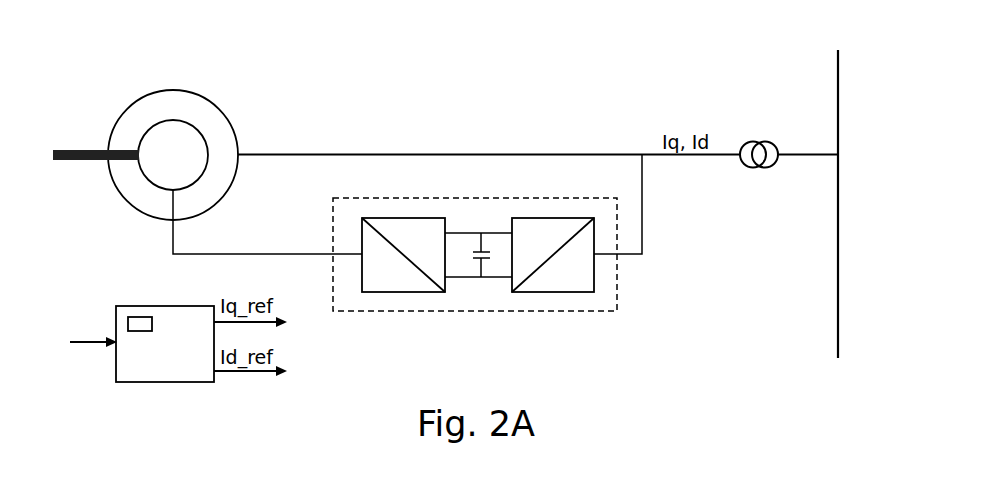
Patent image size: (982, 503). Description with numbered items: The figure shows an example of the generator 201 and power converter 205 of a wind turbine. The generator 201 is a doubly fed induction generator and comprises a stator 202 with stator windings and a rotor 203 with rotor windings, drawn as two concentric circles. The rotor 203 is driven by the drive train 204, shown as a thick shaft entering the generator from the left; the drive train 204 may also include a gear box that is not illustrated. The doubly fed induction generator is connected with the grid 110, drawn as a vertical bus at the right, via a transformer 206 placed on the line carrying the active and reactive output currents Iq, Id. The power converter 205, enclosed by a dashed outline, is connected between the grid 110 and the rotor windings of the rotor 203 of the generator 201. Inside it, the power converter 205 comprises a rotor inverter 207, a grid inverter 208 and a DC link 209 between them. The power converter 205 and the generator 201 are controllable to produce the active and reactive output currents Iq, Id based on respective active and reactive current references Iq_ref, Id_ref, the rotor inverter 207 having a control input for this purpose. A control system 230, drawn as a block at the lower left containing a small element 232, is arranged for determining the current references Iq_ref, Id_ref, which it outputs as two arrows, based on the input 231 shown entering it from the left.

The grid 110 is at (835, 65).
The generator 201 is at (147, 88).
The stator 202 is at (203, 92).
The rotor 203 is at (202, 128).
The drive train 204 is at (77, 167).
The power converter 205 is at (362, 318).
The transformer 206 is at (760, 137).
The rotor inverter 207 is at (407, 300).
The grid inverter 208 is at (558, 298).
The DC link 209 is at (480, 287).
The control system 230 is at (172, 385).
The input 231 is at (90, 331).
The processor / memory module 232 is at (138, 333).